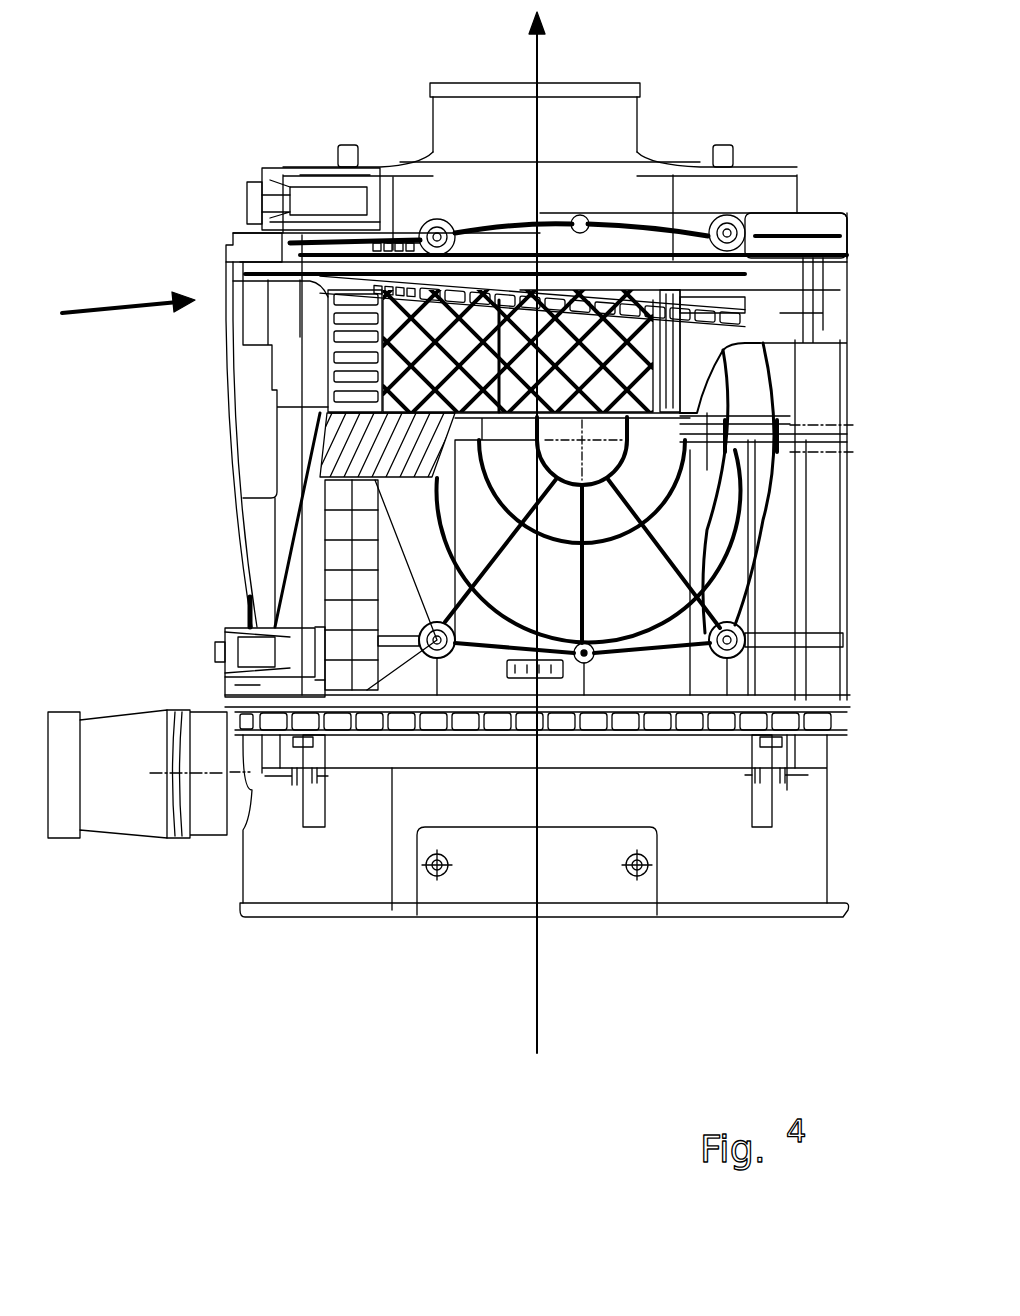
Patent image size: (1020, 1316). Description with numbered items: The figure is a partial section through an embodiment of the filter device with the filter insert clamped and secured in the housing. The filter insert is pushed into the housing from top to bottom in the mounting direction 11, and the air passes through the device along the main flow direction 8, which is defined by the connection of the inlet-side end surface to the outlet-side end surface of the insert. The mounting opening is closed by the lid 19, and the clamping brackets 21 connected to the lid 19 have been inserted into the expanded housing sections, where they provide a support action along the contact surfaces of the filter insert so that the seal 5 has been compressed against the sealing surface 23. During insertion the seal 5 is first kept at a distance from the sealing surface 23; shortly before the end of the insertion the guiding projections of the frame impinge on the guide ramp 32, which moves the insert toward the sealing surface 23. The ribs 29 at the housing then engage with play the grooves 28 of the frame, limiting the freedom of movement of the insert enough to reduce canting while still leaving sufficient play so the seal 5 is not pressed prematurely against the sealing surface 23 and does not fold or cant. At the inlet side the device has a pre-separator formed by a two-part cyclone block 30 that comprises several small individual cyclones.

The seal 5 is at (757, 263).
The main flow direction 8 is at (521, 532).
The mounting direction 11 is at (128, 295).
The lid 19 is at (252, 425).
The clamping brackets 21 is at (440, 335).
The sealing surface 23 is at (797, 258).
The grooves 28 is at (648, 293).
The ribs 29 is at (770, 280).
The cyclone block 30 is at (845, 872).
The guide ramp 32 is at (722, 352).